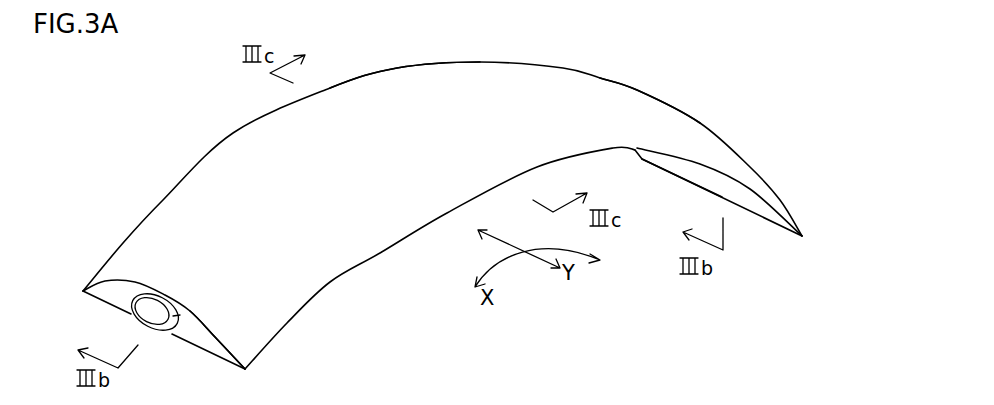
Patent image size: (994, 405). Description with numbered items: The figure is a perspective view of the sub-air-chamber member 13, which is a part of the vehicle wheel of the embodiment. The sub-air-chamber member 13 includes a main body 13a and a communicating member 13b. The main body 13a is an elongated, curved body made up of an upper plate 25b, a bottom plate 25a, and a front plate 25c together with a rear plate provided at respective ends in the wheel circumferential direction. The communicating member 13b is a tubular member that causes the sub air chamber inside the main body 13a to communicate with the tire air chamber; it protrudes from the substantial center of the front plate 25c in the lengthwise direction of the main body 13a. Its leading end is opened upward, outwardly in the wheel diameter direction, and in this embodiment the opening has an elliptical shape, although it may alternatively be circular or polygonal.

The sub-air-chamber member 13 is at (583, 43).
The main body 13a is at (632, 97).
The communicating member 13b is at (182, 317).
The bottom plate 25a is at (672, 163).
The upper plate 25b is at (403, 83).
The front plate 25c is at (197, 337).